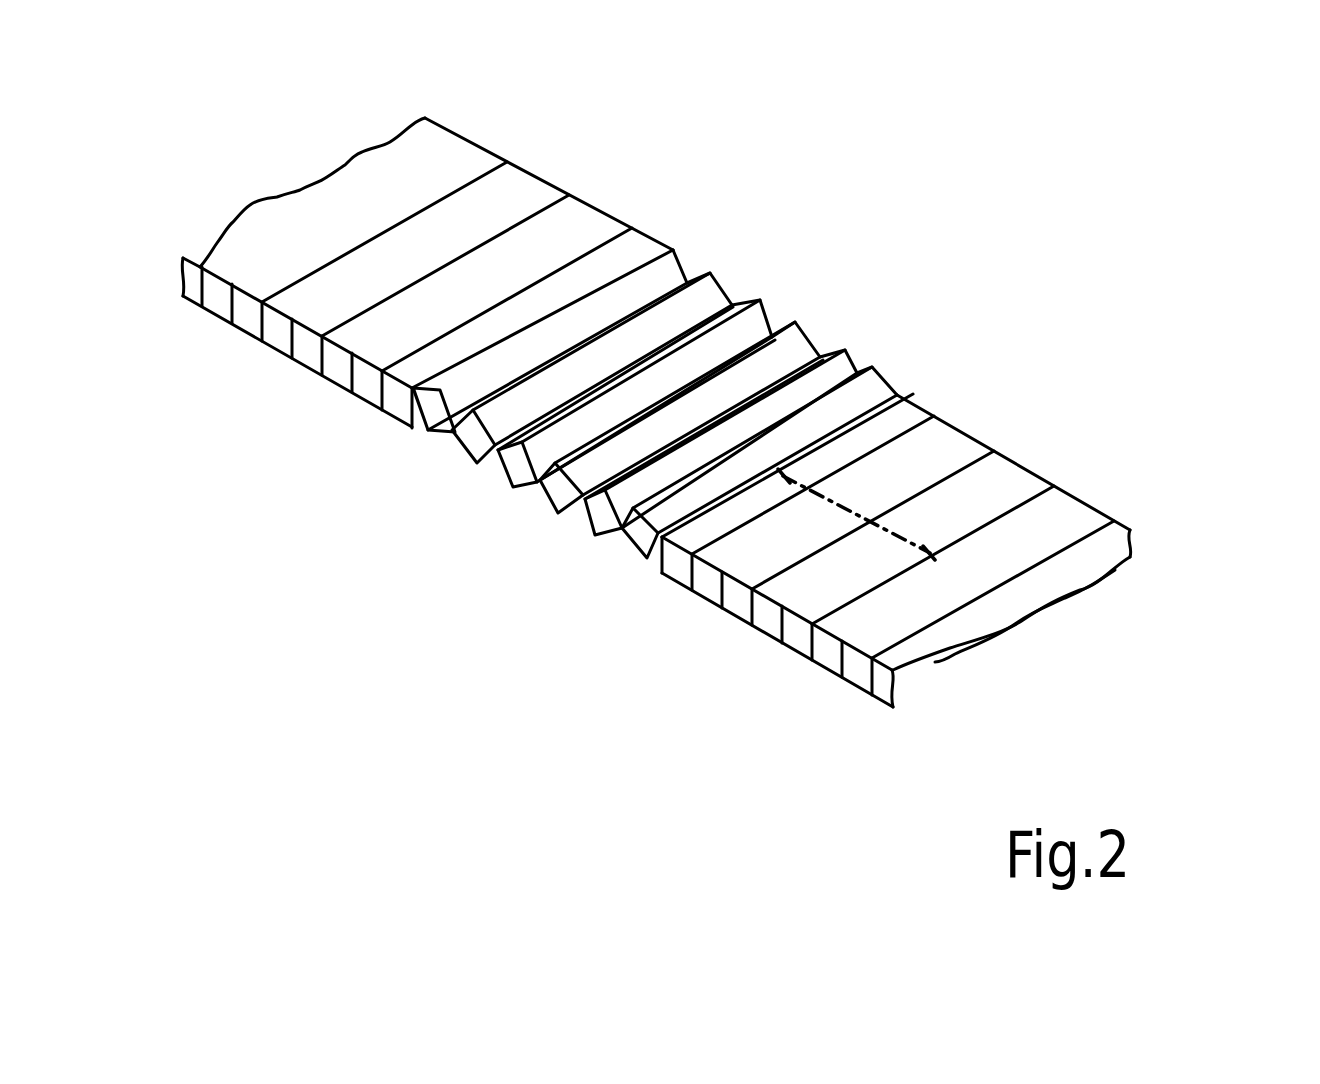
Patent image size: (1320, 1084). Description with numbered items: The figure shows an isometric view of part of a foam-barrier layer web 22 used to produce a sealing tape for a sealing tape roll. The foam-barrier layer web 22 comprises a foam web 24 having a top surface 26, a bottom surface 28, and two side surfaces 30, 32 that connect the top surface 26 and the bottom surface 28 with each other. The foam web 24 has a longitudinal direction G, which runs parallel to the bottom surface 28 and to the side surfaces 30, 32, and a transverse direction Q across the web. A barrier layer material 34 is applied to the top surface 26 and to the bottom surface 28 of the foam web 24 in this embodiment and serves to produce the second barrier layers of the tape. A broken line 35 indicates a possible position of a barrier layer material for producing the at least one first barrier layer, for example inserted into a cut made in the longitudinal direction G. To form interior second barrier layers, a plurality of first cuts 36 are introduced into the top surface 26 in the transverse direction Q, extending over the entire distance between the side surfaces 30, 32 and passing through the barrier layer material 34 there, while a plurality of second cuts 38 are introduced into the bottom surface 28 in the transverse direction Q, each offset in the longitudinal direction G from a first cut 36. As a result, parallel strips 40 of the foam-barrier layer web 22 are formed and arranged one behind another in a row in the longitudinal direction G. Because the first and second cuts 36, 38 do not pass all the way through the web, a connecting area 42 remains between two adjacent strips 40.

The foam-barrier layer web 22 is at (705, 443).
The foam web 24 is at (936, 518).
The top surface 26 is at (988, 480).
The bottom surface 28 is at (760, 633).
The side surface 30 is at (913, 397).
The side surface 32 is at (708, 578).
The barrier layer material 34 is at (993, 650).
The broken line 35 is at (783, 477).
The first cuts 36 is at (1027, 500).
The second cuts 38 is at (783, 633).
The strips 40 is at (432, 412).
The connecting area 42 is at (631, 397).
The transverse direction Q is at (655, 215).
The longitudinal direction G is at (1040, 628).